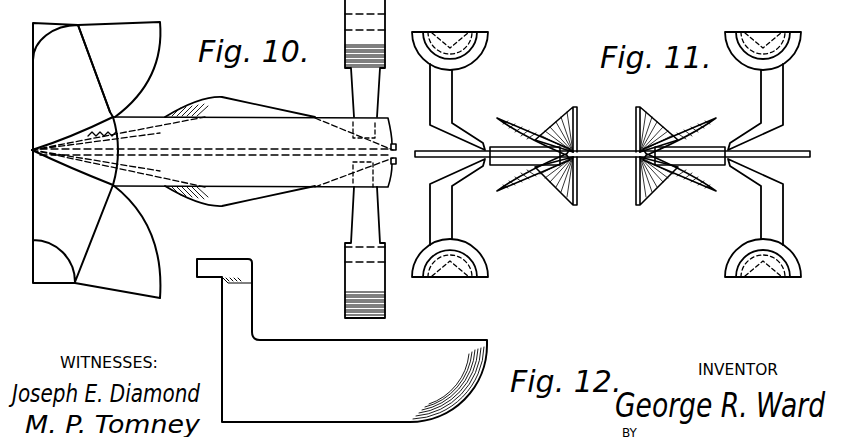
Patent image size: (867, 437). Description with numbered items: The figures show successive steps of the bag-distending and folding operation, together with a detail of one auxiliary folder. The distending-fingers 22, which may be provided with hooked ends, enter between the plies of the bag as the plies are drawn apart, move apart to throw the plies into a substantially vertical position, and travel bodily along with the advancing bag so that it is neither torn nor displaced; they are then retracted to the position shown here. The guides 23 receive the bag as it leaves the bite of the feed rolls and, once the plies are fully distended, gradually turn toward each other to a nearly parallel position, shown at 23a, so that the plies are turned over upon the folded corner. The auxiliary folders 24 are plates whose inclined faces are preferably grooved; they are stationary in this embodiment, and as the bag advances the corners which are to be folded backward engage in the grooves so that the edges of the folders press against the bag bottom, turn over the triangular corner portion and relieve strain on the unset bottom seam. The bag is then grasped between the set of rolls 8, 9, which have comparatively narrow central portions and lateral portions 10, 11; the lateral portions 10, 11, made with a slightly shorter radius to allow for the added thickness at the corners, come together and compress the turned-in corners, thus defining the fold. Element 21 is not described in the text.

In FIG. 10, the roll 8 is at (119, 69).
In FIG. 10, the roll 9 is at (117, 241).
In FIG. 10, the lateral portion 10 is at (72, 86).
In FIG. 10, the lateral portion 11 is at (72, 216).
In FIG. 10, the die 21 is at (356, 24).
In FIG. 11, the distending-finger 22 is at (440, 122).
In FIG. 10, the guide 23 is at (222, 108).
In FIG. 11, the guide 23 is at (578, 118).
In FIG. 11, the guide in nearly parallel position 23a is at (548, 133).
In FIG. 11, the auxiliary folder plate 24 is at (498, 152).
In FIG. 12, the auxiliary folder plate 24 is at (342, 340).